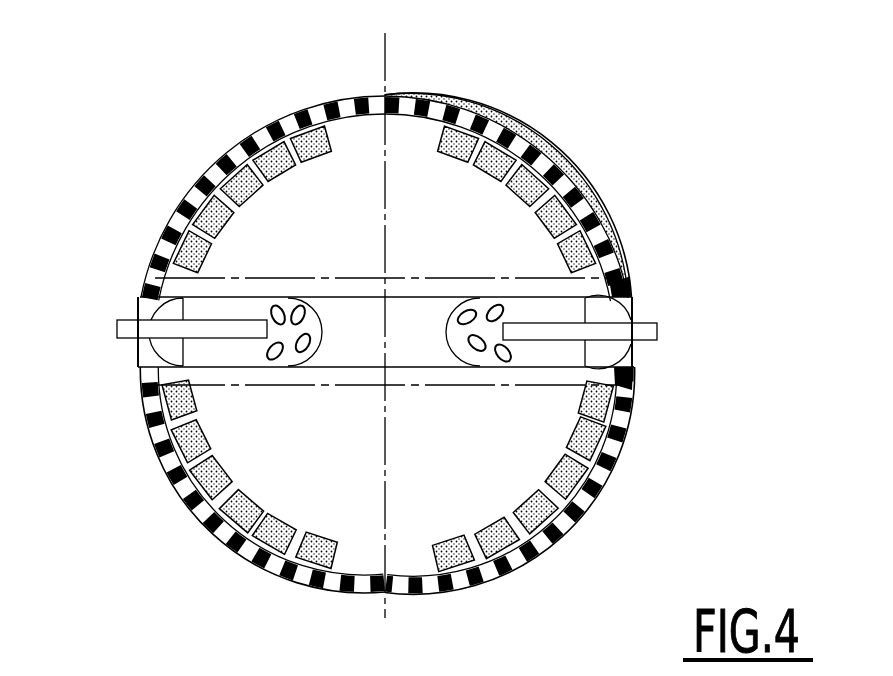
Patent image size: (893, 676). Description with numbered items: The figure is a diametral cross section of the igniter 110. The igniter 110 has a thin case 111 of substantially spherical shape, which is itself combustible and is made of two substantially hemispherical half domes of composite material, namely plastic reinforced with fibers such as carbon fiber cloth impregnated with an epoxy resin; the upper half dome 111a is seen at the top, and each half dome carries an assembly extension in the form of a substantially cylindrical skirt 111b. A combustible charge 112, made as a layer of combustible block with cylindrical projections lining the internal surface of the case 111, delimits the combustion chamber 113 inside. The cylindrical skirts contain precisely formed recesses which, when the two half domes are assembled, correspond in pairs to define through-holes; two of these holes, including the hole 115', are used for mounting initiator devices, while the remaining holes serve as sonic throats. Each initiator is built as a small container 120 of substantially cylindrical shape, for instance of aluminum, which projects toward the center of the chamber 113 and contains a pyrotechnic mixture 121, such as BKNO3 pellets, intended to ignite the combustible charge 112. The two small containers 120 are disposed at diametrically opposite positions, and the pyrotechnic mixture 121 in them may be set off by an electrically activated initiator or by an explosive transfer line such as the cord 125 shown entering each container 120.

The igniter 110 is at (187, 116).
The case 111 is at (390, 86).
The half dome 111a is at (556, 160).
The cylindrical skirt 111b is at (630, 288).
The combustible charge 112 is at (165, 200).
The combustion chamber 113 is at (444, 243).
The hole 115' is at (104, 370).
The small container 120 is at (445, 312).
The pyrotechnic mixture 121 is at (297, 306).
The cord 125 is at (655, 330).